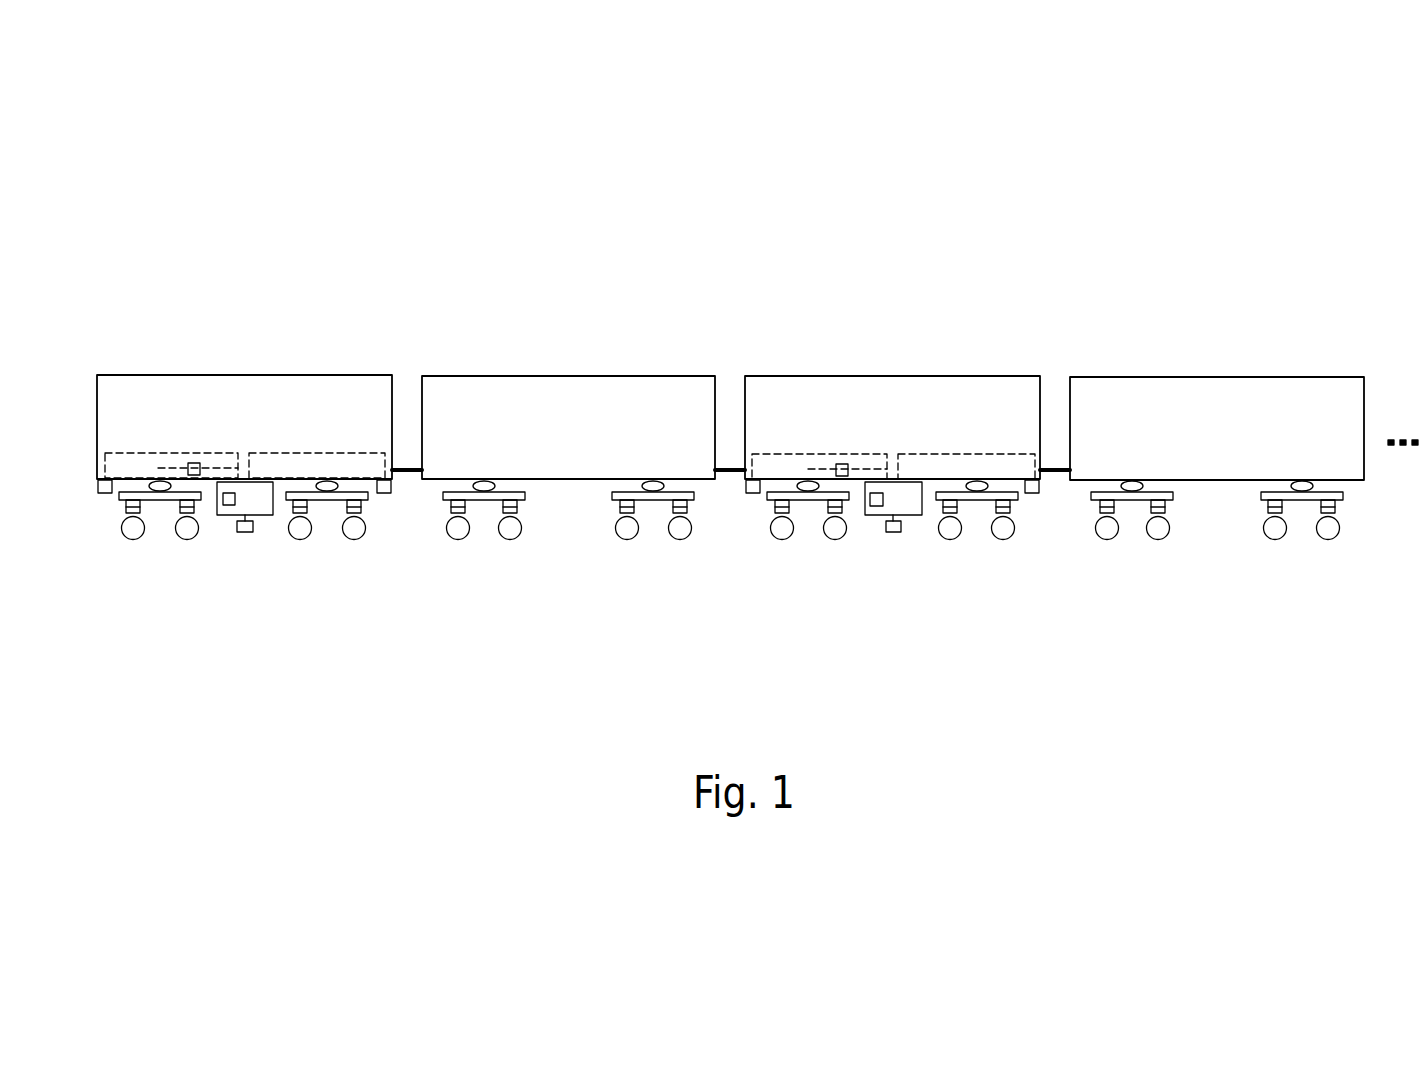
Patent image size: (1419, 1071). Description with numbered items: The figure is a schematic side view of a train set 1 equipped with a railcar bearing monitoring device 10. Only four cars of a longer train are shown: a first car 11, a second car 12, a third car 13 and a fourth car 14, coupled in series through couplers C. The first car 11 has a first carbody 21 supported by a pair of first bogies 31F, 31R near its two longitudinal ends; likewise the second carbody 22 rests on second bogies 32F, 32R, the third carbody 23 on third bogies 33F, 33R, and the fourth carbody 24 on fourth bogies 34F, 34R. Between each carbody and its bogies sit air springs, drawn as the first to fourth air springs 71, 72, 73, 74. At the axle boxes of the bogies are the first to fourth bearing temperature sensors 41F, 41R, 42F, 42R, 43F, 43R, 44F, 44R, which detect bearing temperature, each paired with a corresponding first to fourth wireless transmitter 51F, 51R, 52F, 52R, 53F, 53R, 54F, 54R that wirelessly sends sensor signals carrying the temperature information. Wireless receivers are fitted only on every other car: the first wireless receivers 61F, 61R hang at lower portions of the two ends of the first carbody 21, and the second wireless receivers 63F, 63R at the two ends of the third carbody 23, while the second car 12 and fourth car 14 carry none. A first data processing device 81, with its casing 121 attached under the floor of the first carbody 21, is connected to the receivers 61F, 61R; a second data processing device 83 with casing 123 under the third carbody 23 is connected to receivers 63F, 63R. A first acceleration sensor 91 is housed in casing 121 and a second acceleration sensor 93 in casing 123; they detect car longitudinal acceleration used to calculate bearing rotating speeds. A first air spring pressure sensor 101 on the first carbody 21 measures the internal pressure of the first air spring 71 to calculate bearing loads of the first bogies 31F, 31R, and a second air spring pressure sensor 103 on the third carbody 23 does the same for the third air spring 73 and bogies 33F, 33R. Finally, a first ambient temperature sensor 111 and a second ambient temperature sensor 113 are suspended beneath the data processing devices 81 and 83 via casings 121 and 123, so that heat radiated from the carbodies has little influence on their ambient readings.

The train set 1 is at (420, 258).
The railcar bearing monitoring device 10 is at (180, 412).
The first car 11 is at (252, 355).
The second car 12 is at (578, 355).
The third car 13 is at (905, 355).
The fourth car 14 is at (1230, 355).
The first carbody 21 is at (325, 375).
The second carbody 22 is at (660, 376).
The third carbody 23 is at (980, 376).
The fourth carbody 24 is at (1308, 377).
The first bogie 31F is at (187, 548).
The first bogie 31R is at (302, 548).
The second bogie 32F is at (511, 548).
The second bogie 32R is at (627, 548).
The third bogie 33F is at (835, 548).
The third bogie 33R is at (950, 548).
The fourth bogie 34F is at (1158, 548).
The fourth bogie 34R is at (1275, 548).
The first bearing temperature sensor 41F is at (145, 510).
The first bearing temperature sensor 41R is at (350, 512).
The second bearing temperature sensor 42F is at (470, 512).
The second bearing temperature sensor 42R is at (673, 512).
The third bearing temperature sensor 43F is at (794, 512).
The third bearing temperature sensor 43R is at (997, 512).
The fourth bearing temperature sensor 44F is at (1119, 512).
The fourth bearing temperature sensor 44R is at (1322, 512).
The first wireless transmitter 51F is at (120, 535).
The first wireless transmitter 51R is at (366, 537).
The second wireless transmitter 52F is at (444, 510).
The second wireless transmitter 52R is at (692, 537).
The third wireless transmitter 53F is at (769, 535).
The third wireless transmitter 53R is at (1015, 537).
The fourth wireless transmitter 54F is at (1094, 535).
The fourth wireless transmitter 54R is at (1340, 537).
The first wireless receiver 61F is at (103, 494).
The first wireless receiver 61R is at (386, 494).
The second wireless receiver 63F is at (752, 494).
The second wireless receiver 63R is at (1034, 494).
The first air spring 71 is at (160, 481).
The second air spring 72 is at (484, 481).
The third air spring 73 is at (808, 481).
The fourth air spring 74 is at (1132, 481).
The first data processing device 81 is at (265, 517).
The second data processing device 83 is at (913, 517).
The first acceleration sensor 91 is at (229, 506).
The second acceleration sensor 93 is at (877, 508).
The first air spring pressure sensor 101 is at (196, 463).
The second air spring pressure sensor 103 is at (842, 463).
The first ambient temperature sensor 111 is at (247, 533).
The second ambient temperature sensor 113 is at (896, 533).
The casing 121 is at (215, 512).
The casing 123 is at (864, 512).
The coupler C is at (405, 474).